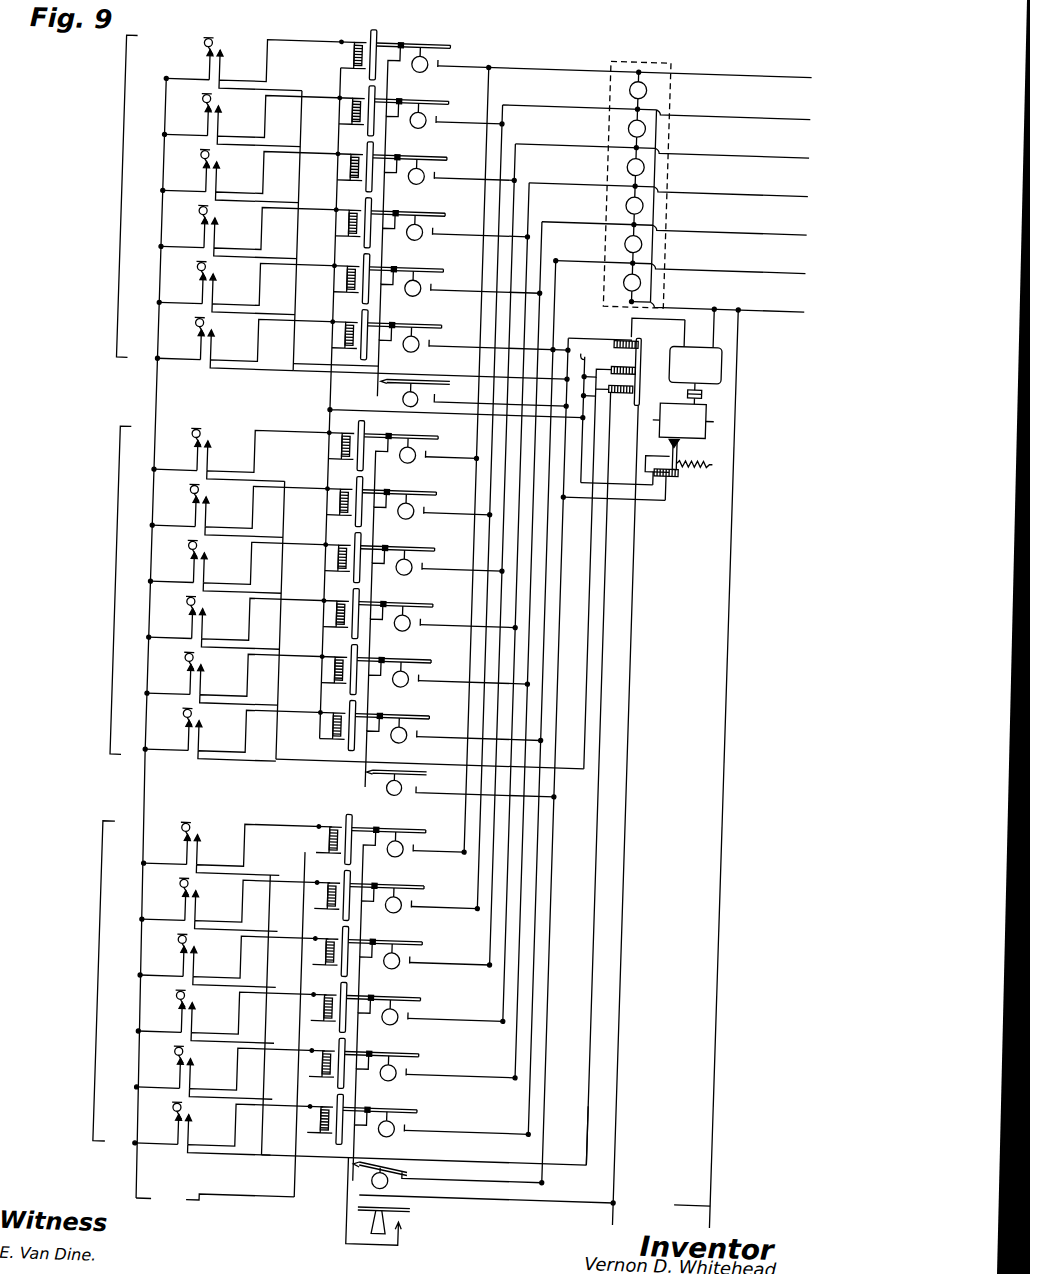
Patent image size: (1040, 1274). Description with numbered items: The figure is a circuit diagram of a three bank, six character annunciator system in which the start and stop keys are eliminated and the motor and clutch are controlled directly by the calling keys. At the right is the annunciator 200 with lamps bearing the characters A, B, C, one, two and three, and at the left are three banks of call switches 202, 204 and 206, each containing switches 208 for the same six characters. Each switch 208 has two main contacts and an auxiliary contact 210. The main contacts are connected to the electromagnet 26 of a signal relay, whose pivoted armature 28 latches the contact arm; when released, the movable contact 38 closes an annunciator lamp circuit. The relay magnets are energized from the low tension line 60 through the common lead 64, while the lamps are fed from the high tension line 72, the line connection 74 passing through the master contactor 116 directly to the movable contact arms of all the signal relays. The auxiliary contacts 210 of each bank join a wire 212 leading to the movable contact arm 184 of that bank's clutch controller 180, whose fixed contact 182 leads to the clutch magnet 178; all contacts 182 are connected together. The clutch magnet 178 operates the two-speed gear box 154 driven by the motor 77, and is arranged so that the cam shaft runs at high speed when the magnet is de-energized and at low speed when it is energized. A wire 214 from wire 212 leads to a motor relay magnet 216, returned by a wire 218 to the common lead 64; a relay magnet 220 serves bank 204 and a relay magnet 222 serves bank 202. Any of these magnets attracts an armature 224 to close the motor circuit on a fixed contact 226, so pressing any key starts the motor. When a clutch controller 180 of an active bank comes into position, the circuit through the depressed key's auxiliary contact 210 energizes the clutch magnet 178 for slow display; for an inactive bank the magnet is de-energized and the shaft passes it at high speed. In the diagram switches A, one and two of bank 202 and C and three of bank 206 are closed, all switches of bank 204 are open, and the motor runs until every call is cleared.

The electromagnet 26 is at (333, 0).
The pivoted armature 28 is at (357, 0).
The movable contact 38 is at (421, 0).
The low tension line 60 is at (215, 1200).
The connecting wire 64 is at (322, 427).
The high tension line 72 is at (636, 1204).
The line wire 74 is at (606, 1170).
The motor 77 is at (690, 340).
The master contactor 116 is at (443, 1231).
The two-speed gear box 154 is at (683, 421).
The clutch magnet 178 is at (664, 468).
The clutch controller 180 is at (435, 385).
The fixed contact 182 is at (421, 1189).
The movable contact arm 184 is at (427, 1170).
The annunciator 200 is at (654, 54).
The bank of call switches 202 is at (120, 976).
The bank of call switches 204 is at (124, 586).
The bank of call switches 206 is at (120, 192).
The call switch 208 is at (206, 1).
The auxiliary contact 210 is at (232, 66).
The wire 212 is at (303, 378).
The wire 214 is at (307, 366).
The motor relay magnet 216 is at (612, 330).
The wire 218 is at (585, 410).
The relay magnet 220 is at (630, 365).
The relay magnet 222 is at (618, 390).
The armature 224 is at (634, 345).
The fixed contact 226 is at (634, 328).